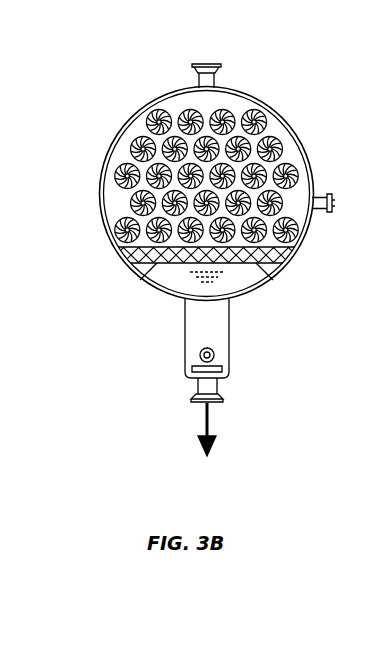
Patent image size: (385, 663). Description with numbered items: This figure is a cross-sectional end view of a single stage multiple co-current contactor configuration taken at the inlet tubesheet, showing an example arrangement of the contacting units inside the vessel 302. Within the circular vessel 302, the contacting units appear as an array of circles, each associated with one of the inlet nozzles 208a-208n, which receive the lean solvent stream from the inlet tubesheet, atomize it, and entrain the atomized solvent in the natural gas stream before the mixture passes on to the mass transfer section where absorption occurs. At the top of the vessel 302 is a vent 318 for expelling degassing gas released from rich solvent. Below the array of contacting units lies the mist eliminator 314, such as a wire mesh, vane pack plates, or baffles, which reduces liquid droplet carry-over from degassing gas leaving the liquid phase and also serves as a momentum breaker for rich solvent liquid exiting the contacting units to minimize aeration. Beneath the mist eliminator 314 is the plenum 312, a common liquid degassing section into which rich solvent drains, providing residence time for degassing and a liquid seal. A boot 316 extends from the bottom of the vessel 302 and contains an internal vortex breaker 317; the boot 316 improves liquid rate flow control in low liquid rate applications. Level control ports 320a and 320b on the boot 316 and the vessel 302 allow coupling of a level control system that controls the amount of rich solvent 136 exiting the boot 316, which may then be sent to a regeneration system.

The vessel 302 is at (304, 140).
The vent 318 is at (213, 63).
The level control port 320b is at (330, 196).
The inlet nozzle 208a is at (262, 114).
The inlet nozzle 208n is at (293, 240).
The plenum 312 is at (140, 281).
The mist eliminator 314 is at (274, 281).
The boot 316 is at (185, 327).
The level control port 320a is at (214, 351).
The internal vortex breaker 317 is at (192, 366).
The rich solvent 136 is at (208, 445).